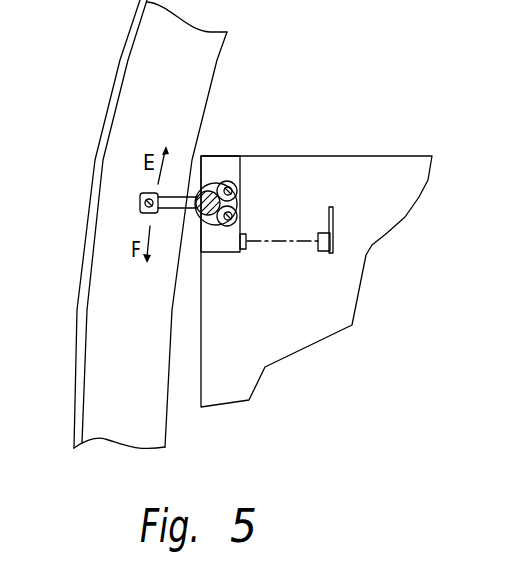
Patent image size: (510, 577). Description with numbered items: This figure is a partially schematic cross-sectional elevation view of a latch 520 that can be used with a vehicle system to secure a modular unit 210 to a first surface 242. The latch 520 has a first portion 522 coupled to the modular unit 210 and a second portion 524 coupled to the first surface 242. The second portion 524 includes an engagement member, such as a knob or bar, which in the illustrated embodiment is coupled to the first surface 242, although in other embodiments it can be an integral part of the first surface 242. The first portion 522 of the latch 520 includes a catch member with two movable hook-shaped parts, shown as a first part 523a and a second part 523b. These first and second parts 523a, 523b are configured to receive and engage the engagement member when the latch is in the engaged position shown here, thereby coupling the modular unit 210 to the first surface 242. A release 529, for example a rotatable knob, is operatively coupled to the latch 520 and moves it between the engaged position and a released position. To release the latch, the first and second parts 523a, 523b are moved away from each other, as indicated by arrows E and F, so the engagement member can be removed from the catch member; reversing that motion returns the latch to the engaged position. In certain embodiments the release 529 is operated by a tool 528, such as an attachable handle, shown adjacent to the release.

The first surface 242 is at (110, 365).
The modular unit 210 is at (343, 176).
The latch 520 is at (184, 266).
The first portion 522 is at (256, 193).
The first part 523a is at (219, 184).
The second part 523b is at (220, 225).
The second portion 524 is at (203, 226).
The tool 528 is at (331, 245).
The release 529 is at (248, 248).